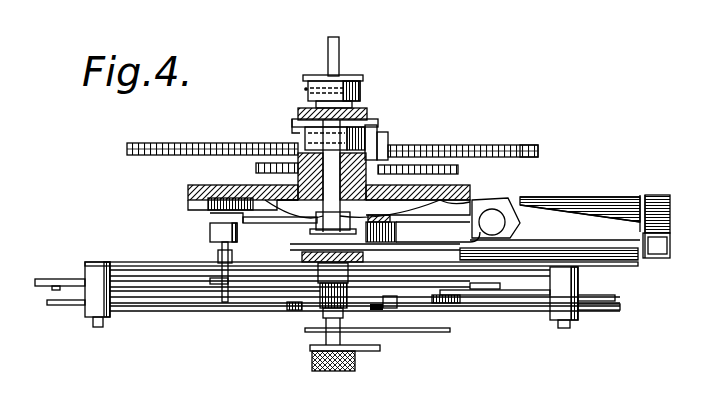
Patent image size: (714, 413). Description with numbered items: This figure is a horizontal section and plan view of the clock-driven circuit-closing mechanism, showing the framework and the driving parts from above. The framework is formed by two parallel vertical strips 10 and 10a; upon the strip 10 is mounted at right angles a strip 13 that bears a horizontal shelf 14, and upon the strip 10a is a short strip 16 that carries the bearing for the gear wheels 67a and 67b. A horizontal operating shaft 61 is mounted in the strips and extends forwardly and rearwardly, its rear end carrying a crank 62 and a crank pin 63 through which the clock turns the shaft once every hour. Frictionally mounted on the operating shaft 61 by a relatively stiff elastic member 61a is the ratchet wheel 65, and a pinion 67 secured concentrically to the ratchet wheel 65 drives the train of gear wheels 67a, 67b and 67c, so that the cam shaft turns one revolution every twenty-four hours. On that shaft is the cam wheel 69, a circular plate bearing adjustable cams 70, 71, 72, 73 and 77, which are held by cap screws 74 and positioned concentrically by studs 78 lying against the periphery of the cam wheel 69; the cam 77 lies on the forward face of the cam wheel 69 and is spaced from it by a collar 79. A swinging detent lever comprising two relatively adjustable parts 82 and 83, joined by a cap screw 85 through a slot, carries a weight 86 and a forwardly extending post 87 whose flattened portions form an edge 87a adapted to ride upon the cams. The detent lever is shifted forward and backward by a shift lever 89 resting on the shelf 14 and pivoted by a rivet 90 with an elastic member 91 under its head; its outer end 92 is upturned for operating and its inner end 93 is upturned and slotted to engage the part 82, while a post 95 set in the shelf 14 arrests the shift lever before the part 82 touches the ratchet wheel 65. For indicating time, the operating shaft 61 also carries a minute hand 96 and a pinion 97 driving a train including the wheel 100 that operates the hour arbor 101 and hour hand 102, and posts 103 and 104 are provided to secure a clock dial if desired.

The crank pin 63 is at (338, 46).
The crank 62 is at (350, 77).
The vertical strip 10a is at (354, 92).
The short strip 16 is at (297, 126).
The gear wheel 67b is at (375, 127).
The operating shaft 61 is at (337, 172).
The pinion 67 is at (365, 172).
The gear wheel 67a is at (435, 166).
The ratchet wheel 65 is at (462, 188).
The gear wheel 67c is at (532, 149).
The detent lever part 82 is at (256, 212).
The detent lever part 83 is at (238, 222).
The weight 86 is at (212, 230).
The post 87 is at (222, 249).
The elastic member 61a is at (287, 201).
The cap screw 85 is at (312, 231).
The vertical strip 10 is at (302, 254).
The upturned inner end 93 is at (423, 242).
The rivet 90 is at (495, 222).
The elastic member 91 is at (512, 227).
The shift lever 89 is at (568, 218).
The horizontal shelf 14 is at (627, 202).
The upturned outer end 92 is at (667, 251).
The post 95 is at (608, 253).
The strip 13 is at (118, 263).
The adjustable cam 72 is at (140, 296).
The post 103 is at (88, 318).
The adjustable cam 73 is at (42, 279).
The cap screw 74 is at (202, 302).
The edge 87a is at (230, 279).
The adjustable cam 70 is at (614, 297).
The adjustable cam 77 is at (622, 310).
The cam wheel 69 is at (522, 292).
The post 104 is at (568, 320).
The adjustable cam 71 is at (500, 284).
The stud 78 is at (447, 292).
The collar 79 is at (386, 305).
The wheel 100 is at (295, 308).
The pinion 97 is at (315, 308).
The hour arbor 101 is at (328, 316).
The minute hand 96 is at (418, 331).
The hour hand 102 is at (368, 348).